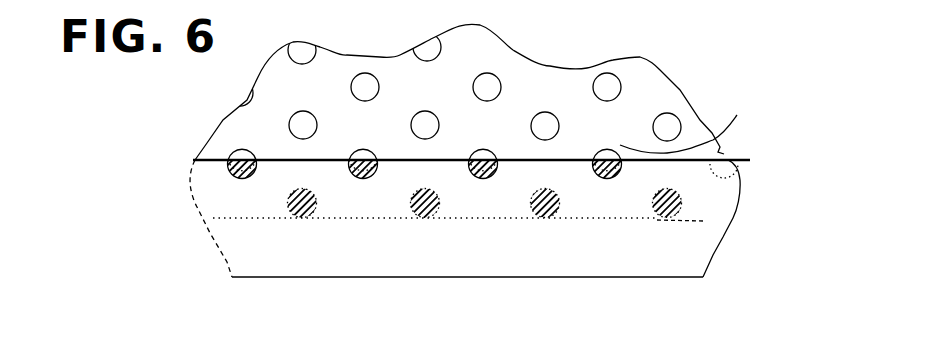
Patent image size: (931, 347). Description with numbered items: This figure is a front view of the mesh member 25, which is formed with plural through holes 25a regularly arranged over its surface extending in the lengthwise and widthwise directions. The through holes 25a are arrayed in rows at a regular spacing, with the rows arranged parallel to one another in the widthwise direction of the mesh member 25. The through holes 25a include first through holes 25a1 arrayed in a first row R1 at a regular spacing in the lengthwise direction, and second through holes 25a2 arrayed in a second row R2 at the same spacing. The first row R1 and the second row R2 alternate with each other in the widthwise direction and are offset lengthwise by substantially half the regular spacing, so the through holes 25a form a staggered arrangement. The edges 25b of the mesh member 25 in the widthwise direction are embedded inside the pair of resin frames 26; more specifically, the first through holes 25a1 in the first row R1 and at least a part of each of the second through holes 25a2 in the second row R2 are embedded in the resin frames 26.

The mesh member 25 is at (667, 101).
The through holes 25a is at (553, 119).
The first through holes 25a1 is at (532, 214).
The second through holes 25a2 is at (724, 153).
The edges 25b is at (703, 221).
The resin frames 26 is at (321, 262).
The first row R1 is at (158, 212).
The second row R2 is at (158, 174).